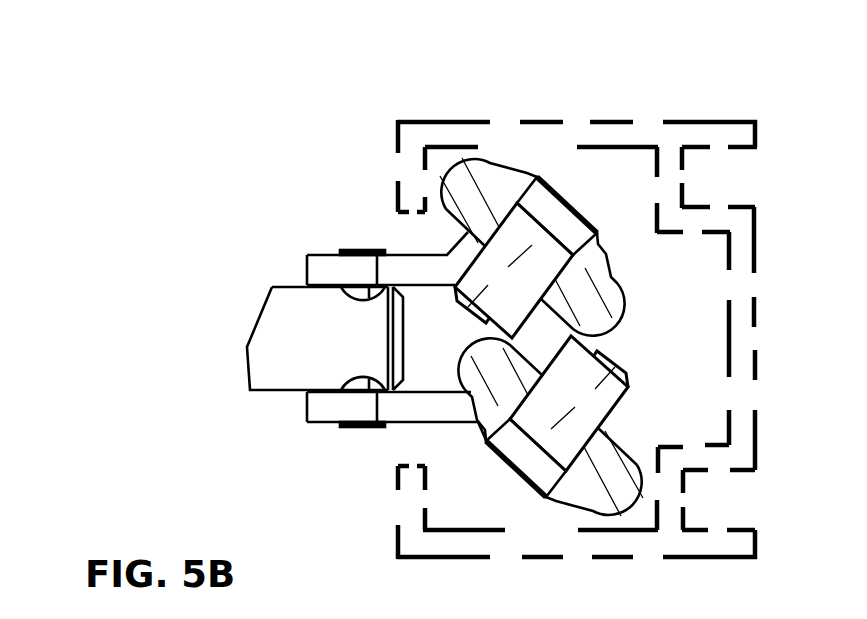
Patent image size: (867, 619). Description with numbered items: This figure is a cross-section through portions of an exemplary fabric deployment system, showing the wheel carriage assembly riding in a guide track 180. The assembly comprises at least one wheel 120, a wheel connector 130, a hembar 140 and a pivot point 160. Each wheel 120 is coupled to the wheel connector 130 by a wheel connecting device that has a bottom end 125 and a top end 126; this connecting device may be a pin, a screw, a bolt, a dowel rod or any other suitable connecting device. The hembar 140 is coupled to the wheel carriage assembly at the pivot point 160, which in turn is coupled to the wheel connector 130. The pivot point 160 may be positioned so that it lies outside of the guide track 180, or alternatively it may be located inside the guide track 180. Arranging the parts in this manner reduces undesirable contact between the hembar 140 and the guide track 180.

The wheel 120 is at (492, 178).
The bottom end 125 is at (462, 308).
The top end 126 is at (573, 202).
The wheel connector 130 is at (553, 352).
The hembar 140 is at (275, 348).
The pivot point 160 is at (350, 253).
The guide track 180 is at (398, 130).